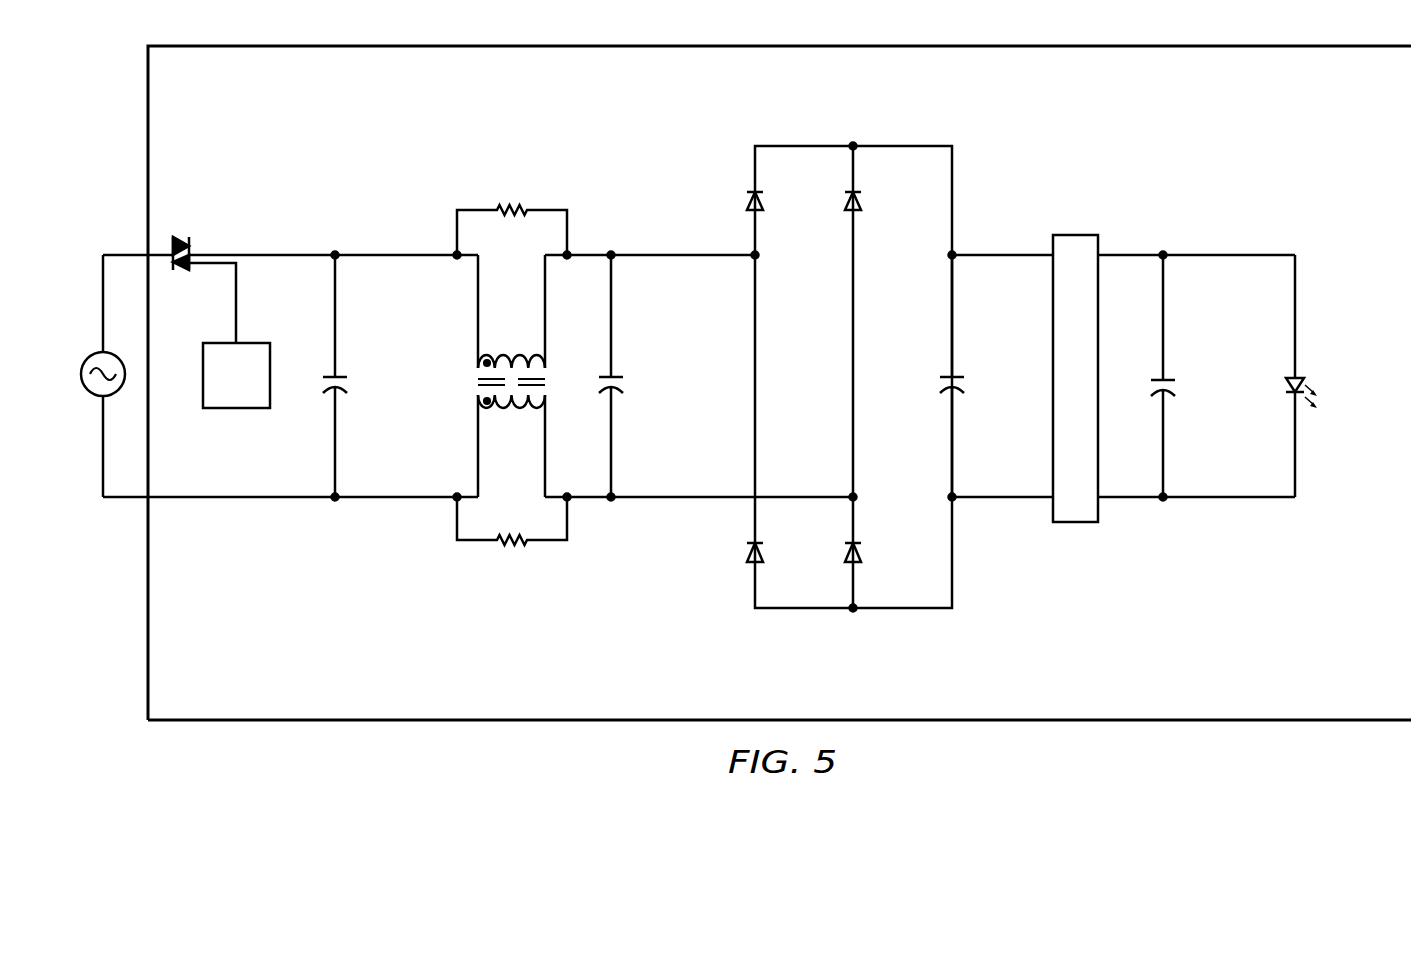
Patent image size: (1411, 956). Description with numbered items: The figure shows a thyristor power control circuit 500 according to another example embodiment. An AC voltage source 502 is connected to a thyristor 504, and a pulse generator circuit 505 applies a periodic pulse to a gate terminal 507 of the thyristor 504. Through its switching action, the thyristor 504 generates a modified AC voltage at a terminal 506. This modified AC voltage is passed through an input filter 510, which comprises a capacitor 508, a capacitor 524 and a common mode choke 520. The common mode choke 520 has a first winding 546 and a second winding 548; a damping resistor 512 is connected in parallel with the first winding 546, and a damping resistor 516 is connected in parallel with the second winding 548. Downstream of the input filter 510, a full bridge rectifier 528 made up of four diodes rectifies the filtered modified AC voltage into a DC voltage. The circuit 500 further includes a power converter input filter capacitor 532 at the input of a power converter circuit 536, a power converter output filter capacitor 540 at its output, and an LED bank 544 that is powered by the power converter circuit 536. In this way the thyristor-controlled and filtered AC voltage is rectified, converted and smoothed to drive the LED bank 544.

The thyristor power control circuit 500 is at (1044, 588).
The AC voltage source 502 is at (95, 353).
The thyristor 504 is at (183, 237).
The pulse generator circuit 505 is at (217, 394).
The terminal 506 is at (273, 253).
The gate terminal 507 is at (232, 313).
The capacitor 508 is at (332, 376).
The input filter 510 is at (480, 172).
The damping resistor 512 is at (516, 207).
The damping resistor 516 is at (516, 545).
The common mode choke 520 is at (545, 348).
The capacitor 524 is at (613, 381).
The full bridge rectifier 528 is at (800, 610).
The power converter input filter capacitor 532 is at (950, 377).
The power converter circuit 536 is at (1075, 234).
The power converter output filter capacitor 540 is at (1160, 380).
The LED bank 544 is at (1292, 377).
The first winding 546 is at (478, 348).
The second winding 548 is at (519, 398).